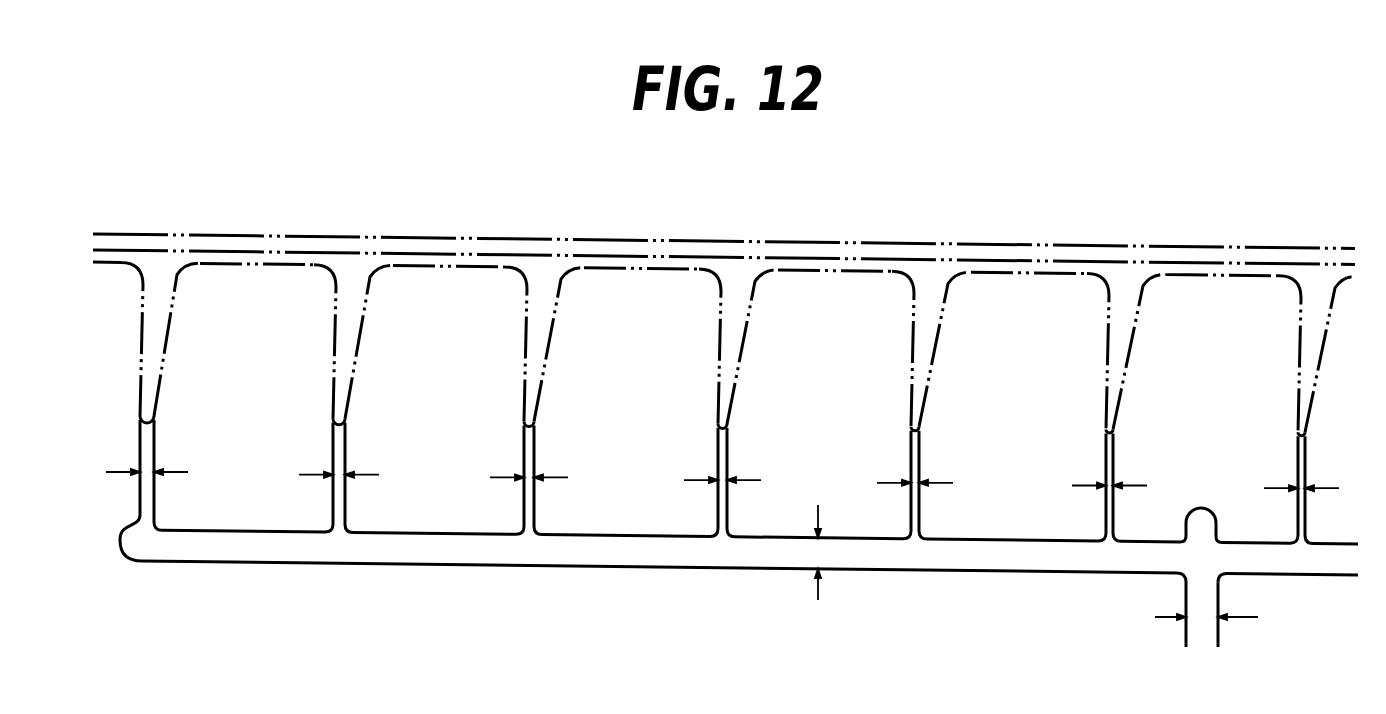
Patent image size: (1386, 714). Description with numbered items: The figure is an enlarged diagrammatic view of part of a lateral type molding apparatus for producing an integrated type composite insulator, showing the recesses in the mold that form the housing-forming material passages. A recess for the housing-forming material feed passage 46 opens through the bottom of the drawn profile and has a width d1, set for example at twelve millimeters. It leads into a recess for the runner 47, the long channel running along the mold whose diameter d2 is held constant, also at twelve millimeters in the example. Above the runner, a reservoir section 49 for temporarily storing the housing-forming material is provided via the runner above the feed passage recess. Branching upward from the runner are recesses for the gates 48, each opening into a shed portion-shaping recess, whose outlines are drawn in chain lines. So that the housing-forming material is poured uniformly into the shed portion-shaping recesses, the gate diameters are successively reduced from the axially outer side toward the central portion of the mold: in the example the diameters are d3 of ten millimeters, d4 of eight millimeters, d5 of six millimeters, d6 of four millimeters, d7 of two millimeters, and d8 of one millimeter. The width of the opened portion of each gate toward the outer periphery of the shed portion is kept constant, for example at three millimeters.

The recess for housing-forming material feed passage 46 is at (1185, 633).
The recess for runner 47 is at (712, 567).
The recess for gates 48 is at (344, 504).
The reservoir section 49 is at (1200, 506).
The diameter of feed passage d1 is at (1206, 601).
The diameter of runner d2 is at (836, 552).
The gate diameter d3 is at (150, 456).
The gate diameter d4 is at (342, 459).
The gate diameter d5 is at (532, 461).
The gate diameter d6 is at (726, 464).
The gate diameter d7 is at (918, 467).
The gate diameter d8 is at (1209, 471).